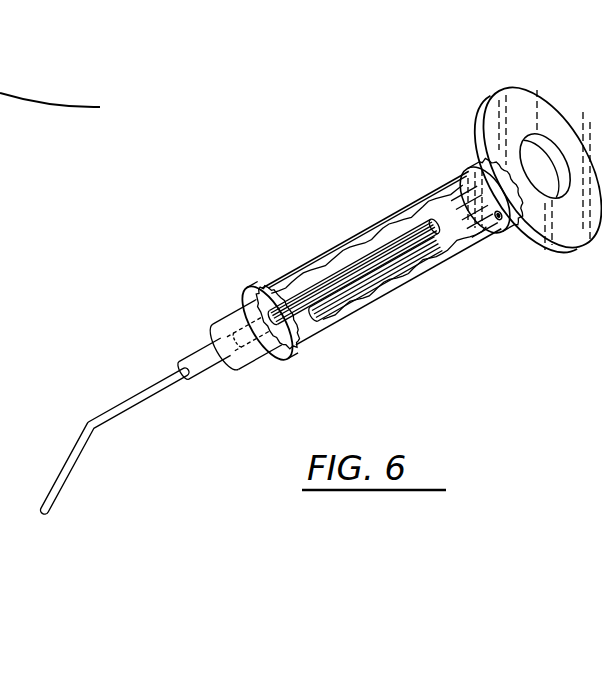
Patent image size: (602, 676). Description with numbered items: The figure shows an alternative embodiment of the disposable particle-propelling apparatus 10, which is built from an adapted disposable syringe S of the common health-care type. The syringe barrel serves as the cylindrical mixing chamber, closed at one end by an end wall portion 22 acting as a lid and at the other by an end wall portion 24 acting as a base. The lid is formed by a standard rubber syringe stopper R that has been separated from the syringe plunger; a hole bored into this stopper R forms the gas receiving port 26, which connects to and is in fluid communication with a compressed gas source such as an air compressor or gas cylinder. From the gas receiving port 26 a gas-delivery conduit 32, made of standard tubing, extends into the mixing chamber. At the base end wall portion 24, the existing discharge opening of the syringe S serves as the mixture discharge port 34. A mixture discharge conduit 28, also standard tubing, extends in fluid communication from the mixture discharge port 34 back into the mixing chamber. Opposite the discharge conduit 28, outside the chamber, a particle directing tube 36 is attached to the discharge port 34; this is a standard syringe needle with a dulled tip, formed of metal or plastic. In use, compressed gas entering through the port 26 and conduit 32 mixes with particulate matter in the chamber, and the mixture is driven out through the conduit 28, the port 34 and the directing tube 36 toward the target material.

The disposable particle-propelling apparatus 10 is at (400, 118).
The disposable syringe S is at (378, 203).
The end wall portion (lid) 22 is at (478, 170).
The end wall portion (base) 24 is at (285, 335).
The gas receiving port 26 is at (552, 150).
The mixture discharge conduit 28 is at (313, 290).
The gas-delivery conduit 32 is at (353, 300).
The mixture discharge port 34 is at (253, 293).
The particle directing tube (needle) 36 is at (123, 403).
The rubber syringe stopper R is at (470, 240).